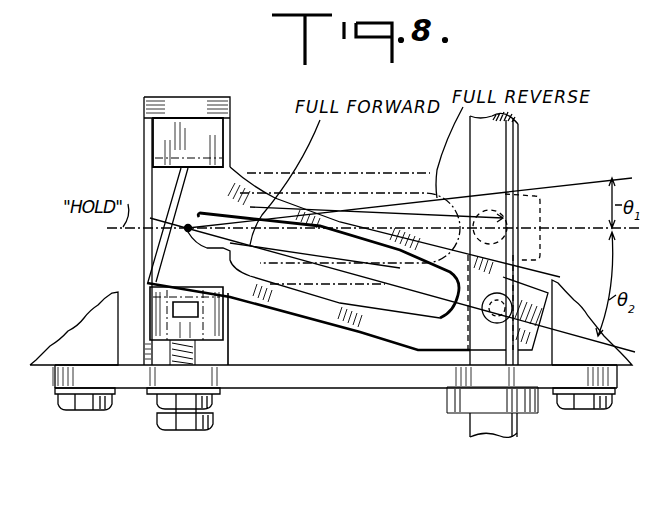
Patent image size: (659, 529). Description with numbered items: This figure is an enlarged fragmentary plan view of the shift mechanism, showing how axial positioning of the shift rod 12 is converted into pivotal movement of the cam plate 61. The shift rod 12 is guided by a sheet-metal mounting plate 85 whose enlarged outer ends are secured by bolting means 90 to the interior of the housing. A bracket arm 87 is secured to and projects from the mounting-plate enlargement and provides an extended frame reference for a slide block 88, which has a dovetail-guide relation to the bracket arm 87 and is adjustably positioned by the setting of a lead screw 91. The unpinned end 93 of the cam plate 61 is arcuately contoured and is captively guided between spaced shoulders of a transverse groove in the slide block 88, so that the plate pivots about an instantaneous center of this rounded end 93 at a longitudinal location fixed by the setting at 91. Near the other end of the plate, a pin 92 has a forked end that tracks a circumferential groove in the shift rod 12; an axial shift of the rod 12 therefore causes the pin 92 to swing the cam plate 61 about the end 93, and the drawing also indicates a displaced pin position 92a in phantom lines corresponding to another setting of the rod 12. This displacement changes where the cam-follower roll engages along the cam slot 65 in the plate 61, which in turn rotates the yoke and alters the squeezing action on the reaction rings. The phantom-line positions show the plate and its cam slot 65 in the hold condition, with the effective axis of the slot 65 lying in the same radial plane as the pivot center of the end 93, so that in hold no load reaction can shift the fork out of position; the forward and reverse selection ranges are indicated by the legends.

The shift rod 12 is at (504, 147).
The cam plate 61 is at (296, 326).
The cam slot 65 is at (287, 226).
The mounting plate 85 is at (324, 392).
The bracket arm 87 is at (232, 106).
The slide block 88 is at (224, 131).
The bolting means 90 is at (67, 410).
The lead screw 91 is at (213, 417).
The pin 92 is at (522, 281).
The block in full forward position 92a is at (538, 193).
The unpinned end of control plate 93 is at (188, 225).